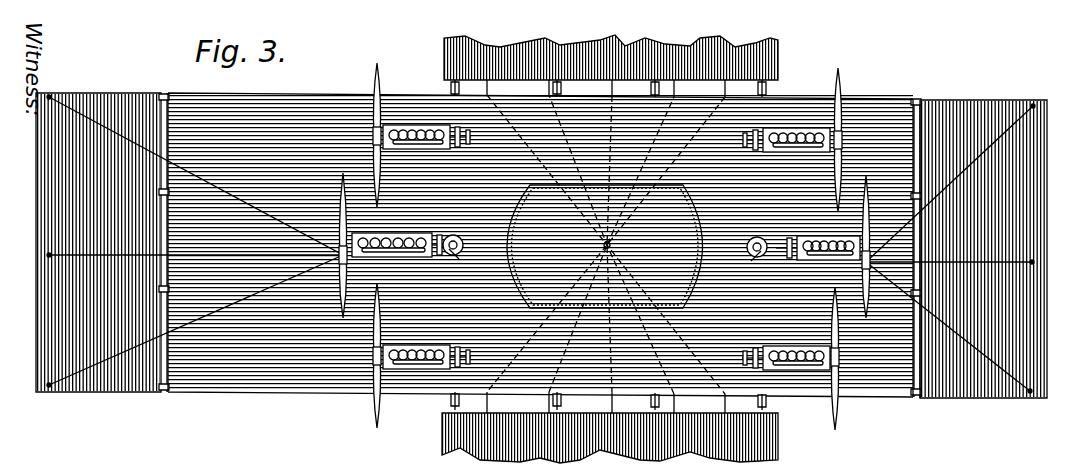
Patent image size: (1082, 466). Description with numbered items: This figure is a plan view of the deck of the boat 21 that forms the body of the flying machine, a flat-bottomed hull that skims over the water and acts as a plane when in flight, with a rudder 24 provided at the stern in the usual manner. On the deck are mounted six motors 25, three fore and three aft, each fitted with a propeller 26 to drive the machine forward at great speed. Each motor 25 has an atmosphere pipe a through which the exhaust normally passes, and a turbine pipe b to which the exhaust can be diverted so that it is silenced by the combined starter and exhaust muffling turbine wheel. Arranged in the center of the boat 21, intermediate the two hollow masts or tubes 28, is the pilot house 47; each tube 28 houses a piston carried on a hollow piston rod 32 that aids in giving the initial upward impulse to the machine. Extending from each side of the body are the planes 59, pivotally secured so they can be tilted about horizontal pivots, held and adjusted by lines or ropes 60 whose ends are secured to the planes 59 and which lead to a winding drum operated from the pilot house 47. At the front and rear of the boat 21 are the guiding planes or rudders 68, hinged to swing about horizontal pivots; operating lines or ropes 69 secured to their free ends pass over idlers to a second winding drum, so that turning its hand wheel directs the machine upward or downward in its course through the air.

The boat 21 is at (868, 102).
The rudder 24 is at (921, 245).
The motors 25 is at (418, 125).
The propellers 26 is at (372, 80).
The hollow masts or tubes 28 is at (455, 235).
The hollow piston rod 32 is at (459, 256).
The pilot house 47 is at (514, 294).
The upper and lower planes 59 is at (446, 47).
The lines or ropes 60 is at (541, 88).
The guiding planes or rudders 68 is at (45, 283).
The operating lines or ropes 69 is at (338, 258).
The atmosphere pipe a is at (460, 148).
The turbine pipe b is at (450, 128).